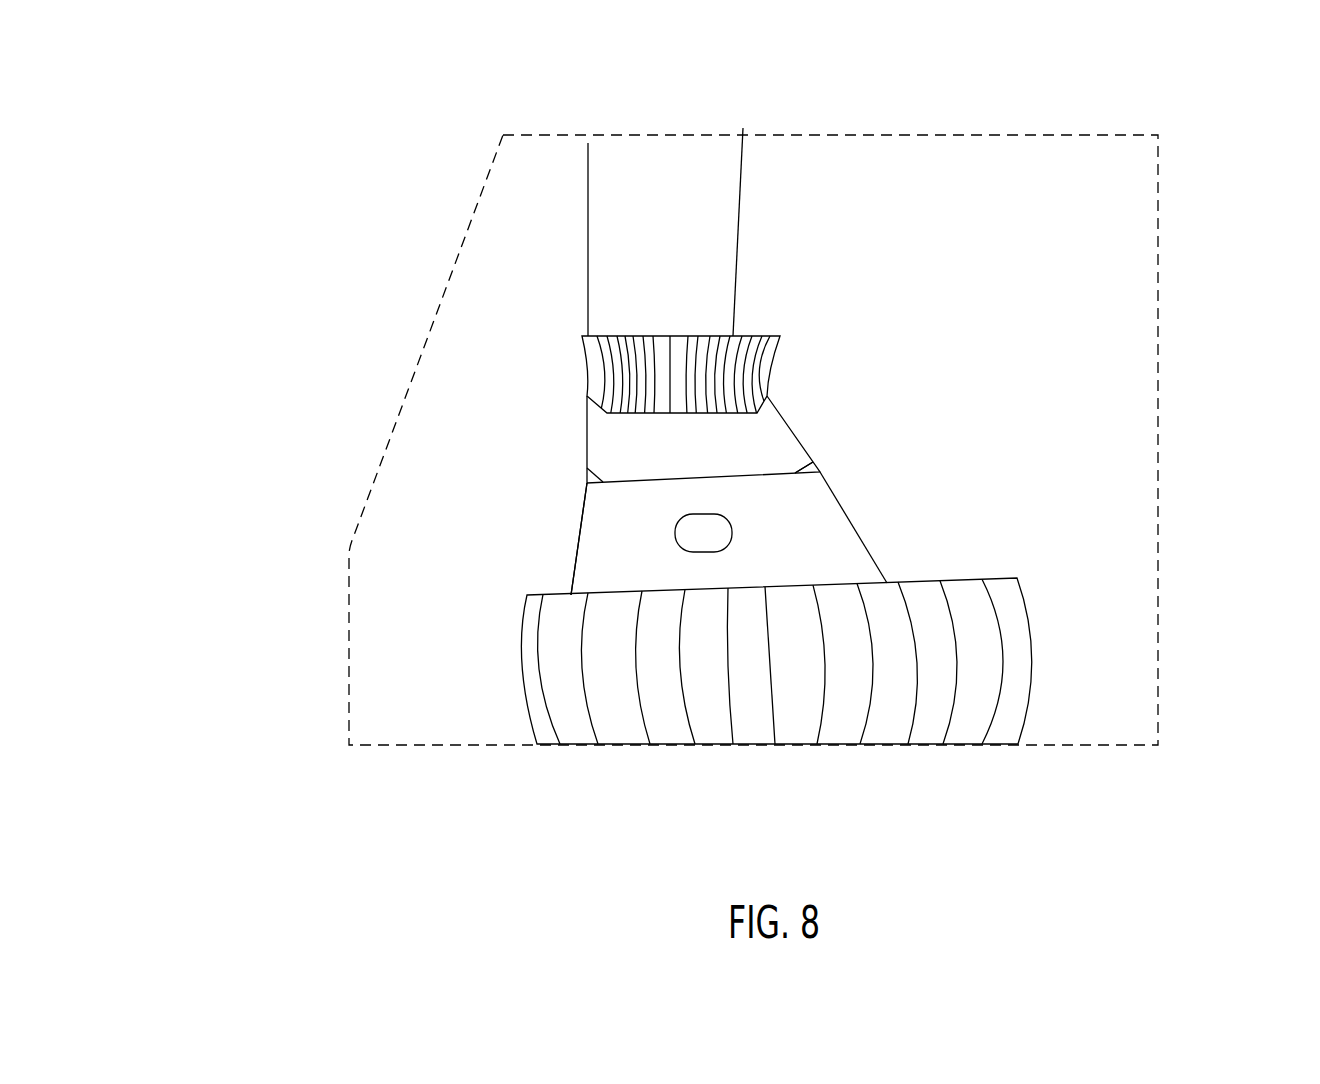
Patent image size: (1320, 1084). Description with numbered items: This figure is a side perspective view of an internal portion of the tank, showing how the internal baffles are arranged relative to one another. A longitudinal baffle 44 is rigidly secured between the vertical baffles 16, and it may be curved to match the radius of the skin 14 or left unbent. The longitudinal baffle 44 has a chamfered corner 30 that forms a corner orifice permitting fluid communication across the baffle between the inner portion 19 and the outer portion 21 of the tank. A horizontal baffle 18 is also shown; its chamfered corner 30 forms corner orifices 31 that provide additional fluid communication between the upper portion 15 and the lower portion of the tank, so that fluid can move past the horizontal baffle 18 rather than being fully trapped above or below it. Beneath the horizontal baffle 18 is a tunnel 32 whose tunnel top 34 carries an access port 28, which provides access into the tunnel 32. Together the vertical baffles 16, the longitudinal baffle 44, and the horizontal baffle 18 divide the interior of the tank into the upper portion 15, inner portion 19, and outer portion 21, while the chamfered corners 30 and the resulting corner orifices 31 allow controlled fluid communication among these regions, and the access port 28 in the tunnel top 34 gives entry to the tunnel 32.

The skin 14 is at (628, 175).
The upper portion 15 is at (753, 440).
The vertical baffles 16 is at (423, 702).
The horizontal baffle 18 is at (703, 439).
The inner portion 19 is at (842, 405).
The outer portion 21 is at (708, 215).
The access port 28 is at (673, 522).
The chamfered corner 30 is at (598, 467).
The corner orifices 31 is at (817, 470).
The tunnel 32 is at (577, 565).
The tunnel top 34 is at (729, 533).
The longitudinal baffle 44 is at (642, 332).